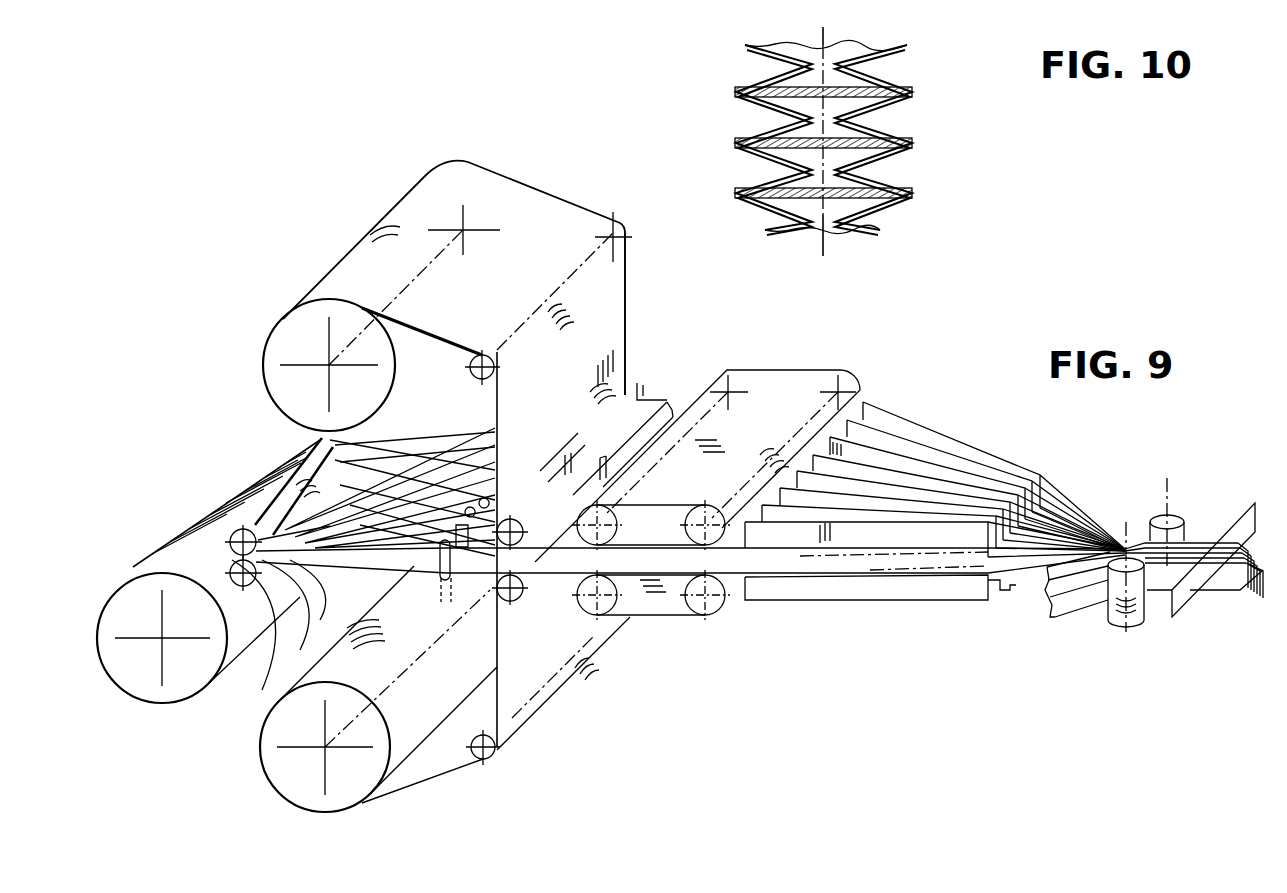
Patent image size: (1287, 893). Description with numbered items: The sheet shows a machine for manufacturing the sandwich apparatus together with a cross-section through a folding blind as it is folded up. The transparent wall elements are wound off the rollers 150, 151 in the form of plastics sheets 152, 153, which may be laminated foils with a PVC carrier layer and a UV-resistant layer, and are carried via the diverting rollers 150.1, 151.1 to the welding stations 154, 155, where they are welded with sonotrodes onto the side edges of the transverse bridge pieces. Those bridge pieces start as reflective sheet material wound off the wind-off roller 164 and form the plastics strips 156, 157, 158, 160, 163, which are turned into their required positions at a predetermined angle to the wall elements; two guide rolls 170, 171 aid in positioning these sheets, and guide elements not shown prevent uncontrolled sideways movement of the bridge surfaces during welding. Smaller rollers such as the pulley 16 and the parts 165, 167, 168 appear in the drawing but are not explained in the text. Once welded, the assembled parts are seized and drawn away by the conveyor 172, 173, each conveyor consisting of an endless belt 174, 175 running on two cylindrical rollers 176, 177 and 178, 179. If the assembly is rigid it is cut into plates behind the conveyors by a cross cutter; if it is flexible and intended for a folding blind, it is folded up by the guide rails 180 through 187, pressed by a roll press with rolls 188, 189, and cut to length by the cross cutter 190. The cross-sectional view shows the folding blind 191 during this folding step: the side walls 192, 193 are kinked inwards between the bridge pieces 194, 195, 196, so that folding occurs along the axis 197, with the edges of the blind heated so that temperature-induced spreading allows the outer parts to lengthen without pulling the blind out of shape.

In FIG. 9, the pulley 16 is at (462, 548).
In FIG. 9, the roller 150 is at (268, 347).
In FIG. 9, the diverting roller 150.1 is at (512, 515).
In FIG. 9, the roller 151 is at (262, 764).
In FIG. 9, the diverting roller 151.1 is at (497, 592).
In FIG. 9, the plastics sheet 152 is at (437, 772).
In FIG. 9, the plastics sheet 153 is at (600, 372).
In FIG. 9, the welding station 154 is at (577, 445).
In FIG. 9, the welding station 155 is at (543, 578).
In FIG. 9, the plastics strip 156 is at (228, 573).
In FIG. 9, the plastics strip 157 is at (228, 542).
In FIG. 9, the plastics strip 158 is at (190, 542).
In FIG. 9, the plastics strip 160 is at (388, 632).
In FIG. 9, the plastics strip 163 is at (280, 462).
In FIG. 9, the wind-off roller 164 is at (162, 703).
In FIG. 9, the nozzle 165 is at (440, 556).
In FIG. 9, the crossed strands 167 is at (390, 482).
In FIG. 9, the upper belt 168 is at (347, 465).
In FIG. 9, the guide roll 170 is at (250, 632).
In FIG. 9, the guide roll 171 is at (292, 590).
In FIG. 9, the conveyor 172 is at (745, 370).
In FIG. 9, the conveyor 173 is at (669, 624).
In FIG. 9, the endless belt 174 is at (808, 374).
In FIG. 9, the endless belt 175 is at (630, 620).
In FIG. 9, the cylindrical roller 176 is at (722, 493).
In FIG. 9, the cylindrical roller 177 is at (612, 512).
In FIG. 9, the cylindrical roller 178 is at (585, 605).
In FIG. 9, the cylindrical roller 179 is at (733, 612).
In FIG. 9, the guide rail 180 is at (935, 528).
In FIG. 9, the guide rail 187 is at (935, 455).
In FIG. 9, the roll 188 is at (1127, 625).
In FIG. 9, the roll 189 is at (1150, 515).
In FIG. 9, the cross cutter 190 is at (1188, 600).
In FIG. 10, the folding blind 191 is at (706, 86).
In FIG. 10, the side wall 192 is at (760, 128).
In FIG. 10, the side wall 193 is at (883, 122).
In FIG. 10, the bridge piece 194 is at (860, 92).
In FIG. 10, the bridge piece 195 is at (868, 200).
In FIG. 10, the bridge piece 196 is at (868, 150).
In FIG. 10, the axis 197 is at (822, 240).